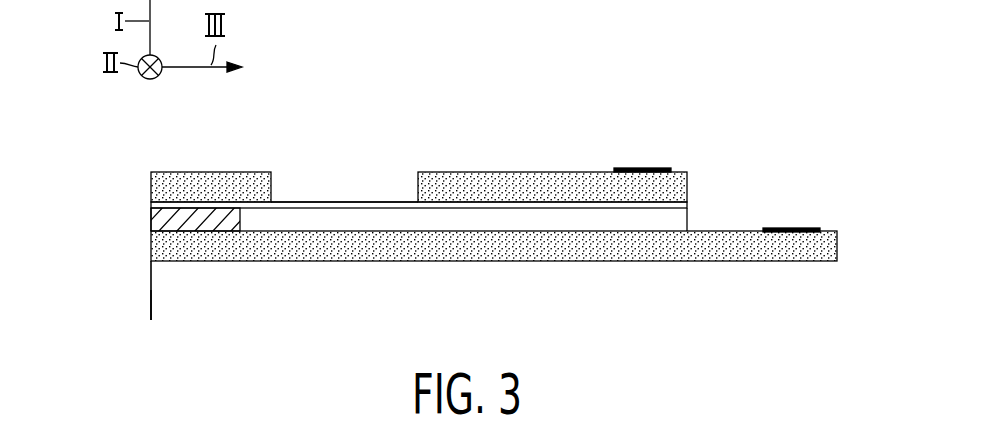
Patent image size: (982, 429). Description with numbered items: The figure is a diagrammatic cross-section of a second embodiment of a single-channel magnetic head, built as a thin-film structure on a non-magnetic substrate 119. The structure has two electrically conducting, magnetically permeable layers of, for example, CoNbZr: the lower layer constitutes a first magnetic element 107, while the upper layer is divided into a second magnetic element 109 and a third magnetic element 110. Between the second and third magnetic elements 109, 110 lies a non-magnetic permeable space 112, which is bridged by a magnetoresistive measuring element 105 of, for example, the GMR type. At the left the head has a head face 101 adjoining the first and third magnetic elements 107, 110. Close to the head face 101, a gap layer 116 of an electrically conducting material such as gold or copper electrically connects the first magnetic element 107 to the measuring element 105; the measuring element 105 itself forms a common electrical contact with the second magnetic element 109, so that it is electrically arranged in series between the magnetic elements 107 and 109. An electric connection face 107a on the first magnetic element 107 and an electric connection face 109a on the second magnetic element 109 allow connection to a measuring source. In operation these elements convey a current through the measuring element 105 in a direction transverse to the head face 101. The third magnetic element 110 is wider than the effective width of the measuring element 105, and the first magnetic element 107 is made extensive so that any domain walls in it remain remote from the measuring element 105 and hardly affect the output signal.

The head face 101 is at (151, 273).
The magnetoresistive measuring element 105 is at (296, 202).
The first magnetic element 107 is at (437, 253).
The electric connection face 107a is at (798, 228).
The second magnetic element 109 is at (498, 182).
The electric connection face 109a is at (640, 168).
The third magnetic element 110 is at (199, 183).
The non-magnetic permeable space 112 is at (359, 185).
The gap layer 116 is at (151, 219).
The non-magnetic substrate 119 is at (165, 302).